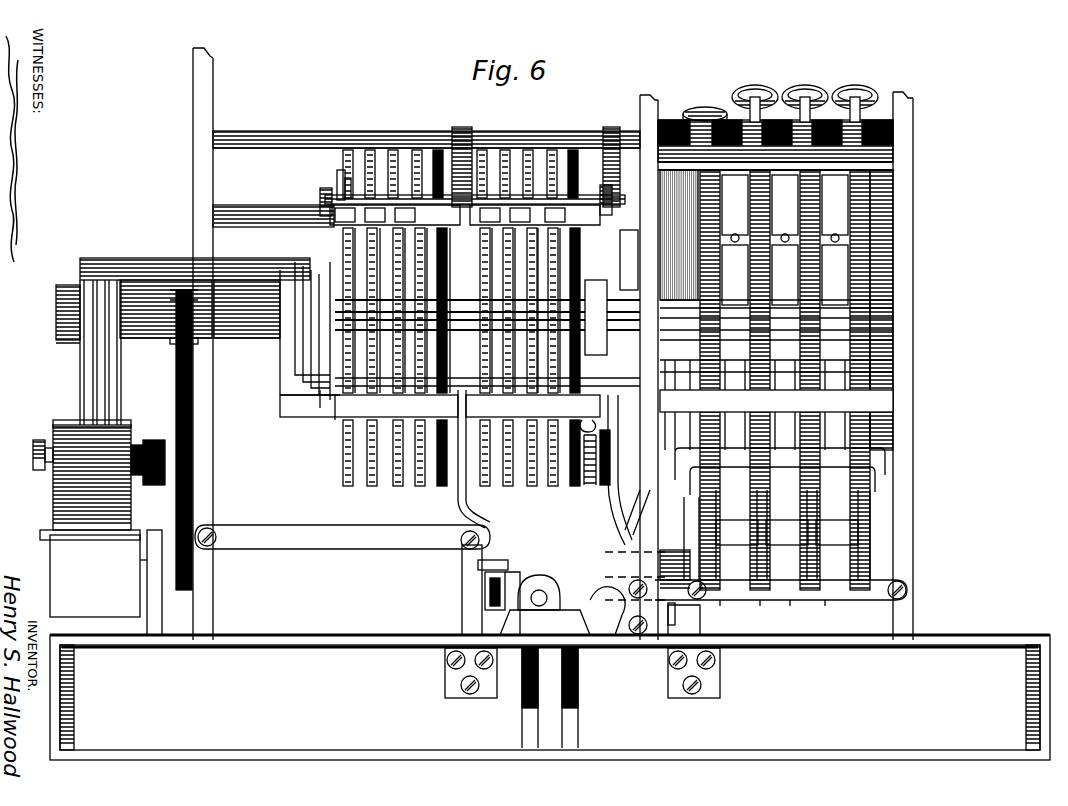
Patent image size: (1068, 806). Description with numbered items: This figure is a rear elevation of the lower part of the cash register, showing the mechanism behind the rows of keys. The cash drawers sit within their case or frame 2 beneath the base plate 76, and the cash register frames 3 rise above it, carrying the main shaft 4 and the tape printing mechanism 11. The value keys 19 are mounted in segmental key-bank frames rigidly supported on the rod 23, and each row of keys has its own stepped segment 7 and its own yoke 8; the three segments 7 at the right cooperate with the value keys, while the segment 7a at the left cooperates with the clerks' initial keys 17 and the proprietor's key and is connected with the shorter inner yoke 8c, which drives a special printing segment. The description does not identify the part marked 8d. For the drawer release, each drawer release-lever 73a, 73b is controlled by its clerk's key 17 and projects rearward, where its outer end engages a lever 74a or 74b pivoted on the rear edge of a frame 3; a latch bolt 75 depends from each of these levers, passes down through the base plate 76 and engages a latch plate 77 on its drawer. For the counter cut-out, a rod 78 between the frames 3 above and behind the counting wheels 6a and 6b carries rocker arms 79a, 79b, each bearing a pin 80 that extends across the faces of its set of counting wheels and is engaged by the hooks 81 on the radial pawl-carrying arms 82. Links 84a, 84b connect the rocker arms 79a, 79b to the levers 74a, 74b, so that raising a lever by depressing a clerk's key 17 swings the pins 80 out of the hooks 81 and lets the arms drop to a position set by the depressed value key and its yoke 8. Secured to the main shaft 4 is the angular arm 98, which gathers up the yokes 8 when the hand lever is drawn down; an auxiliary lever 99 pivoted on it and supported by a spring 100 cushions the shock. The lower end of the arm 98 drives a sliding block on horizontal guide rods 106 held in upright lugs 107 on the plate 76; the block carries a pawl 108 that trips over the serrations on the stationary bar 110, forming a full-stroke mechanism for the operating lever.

The case or frame 2 is at (180, 748).
The cash register frames 3 is at (213, 81).
The main shaft 4 is at (240, 338).
The counting wheels 6a is at (545, 485).
The counting wheels 6b is at (358, 485).
The stepped segments 7 is at (860, 278).
The segment 7a is at (700, 262).
The yokes 8 is at (312, 365).
The inner yoke 8c is at (330, 395).
The connecting rods 8d is at (72, 396).
The tape printing mechanism 11 is at (105, 428).
The clerk's key 17 is at (690, 112).
The keys 19 is at (745, 88).
The rod 23 is at (913, 143).
The drawer release-lever 73a is at (700, 618).
The drawer release-lever 73b is at (690, 552).
The lever 74a is at (760, 612).
The lever 74b is at (540, 535).
The latch bolt 75 is at (462, 582).
The base plate 76 is at (358, 635).
The latch plate 77 is at (446, 650).
The rod 78 is at (256, 134).
The rocker arm 79a is at (606, 128).
The rocker arm 79b is at (468, 120).
The pin 80 is at (325, 190).
The hooks 81 is at (337, 178).
The radial pawl-carrying arms 82 is at (335, 240).
The link 84a is at (622, 262).
The link 84b is at (458, 503).
The angular arm 98 is at (610, 515).
The auxiliary lever 99 is at (590, 420).
The spring 100 is at (600, 488).
The guide rods 106 is at (548, 598).
The upright lugs 107 is at (573, 607).
The pawl 108 is at (490, 598).
The stationary bar 110 is at (495, 610).